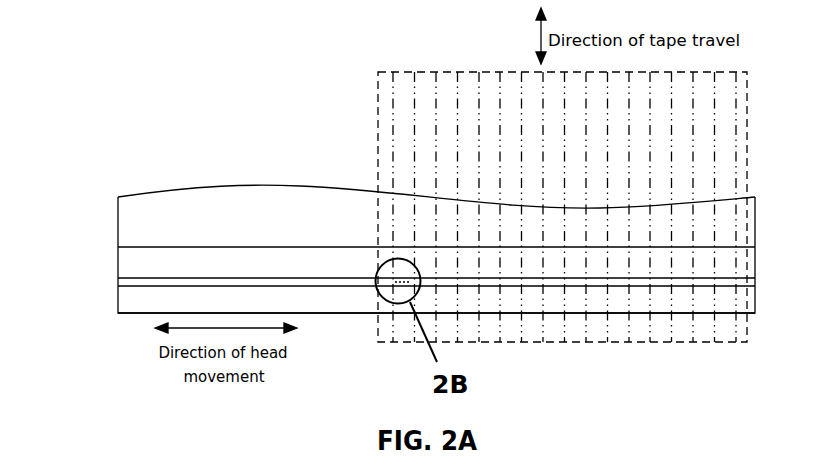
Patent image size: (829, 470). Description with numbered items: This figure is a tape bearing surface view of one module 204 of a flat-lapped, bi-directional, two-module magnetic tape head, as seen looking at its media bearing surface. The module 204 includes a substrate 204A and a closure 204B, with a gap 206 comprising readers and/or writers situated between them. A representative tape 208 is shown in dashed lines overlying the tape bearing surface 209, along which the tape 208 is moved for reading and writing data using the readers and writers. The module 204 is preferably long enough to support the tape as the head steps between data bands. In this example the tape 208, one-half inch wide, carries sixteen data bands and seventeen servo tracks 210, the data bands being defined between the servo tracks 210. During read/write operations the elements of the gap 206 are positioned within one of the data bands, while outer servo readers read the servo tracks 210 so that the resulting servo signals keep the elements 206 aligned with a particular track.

The module 204 is at (155, 172).
The substrate 204A is at (238, 187).
The closure 204B is at (118, 300).
The gap 206 is at (372, 278).
The tape 208 is at (378, 78).
The tape bearing surface 209 is at (292, 267).
The servo tracks 210 is at (475, 150).